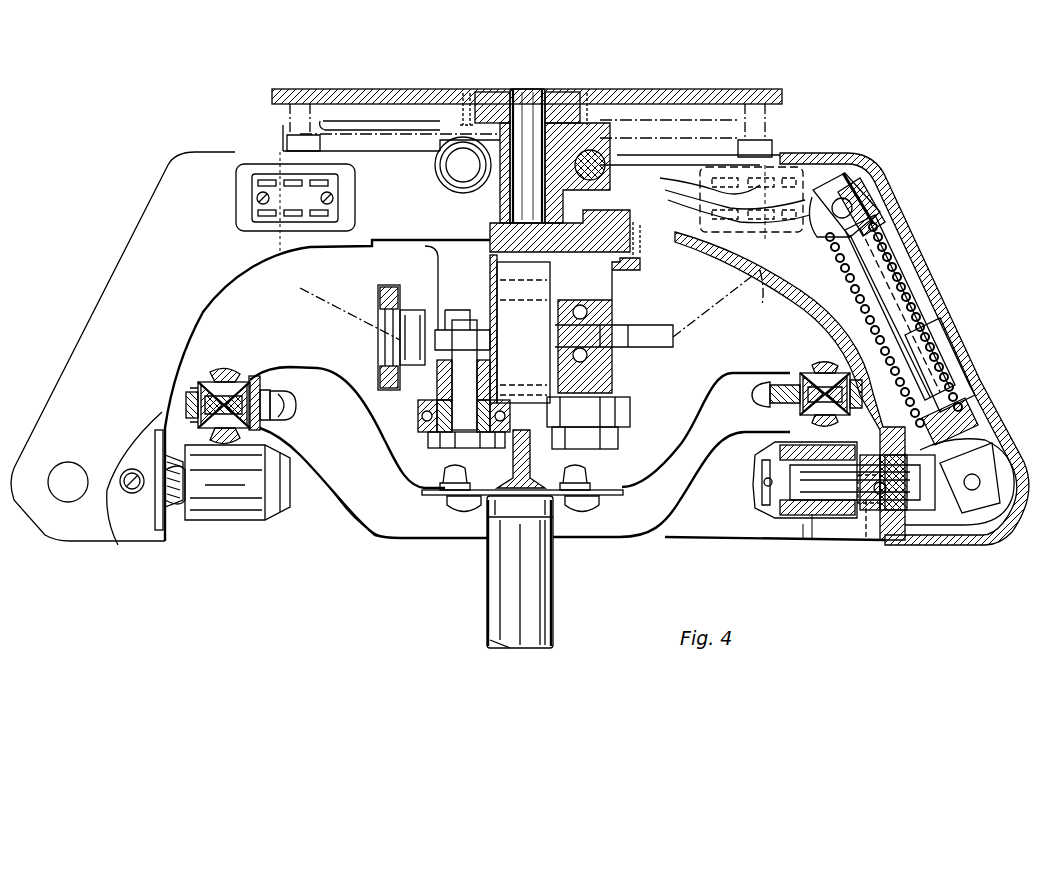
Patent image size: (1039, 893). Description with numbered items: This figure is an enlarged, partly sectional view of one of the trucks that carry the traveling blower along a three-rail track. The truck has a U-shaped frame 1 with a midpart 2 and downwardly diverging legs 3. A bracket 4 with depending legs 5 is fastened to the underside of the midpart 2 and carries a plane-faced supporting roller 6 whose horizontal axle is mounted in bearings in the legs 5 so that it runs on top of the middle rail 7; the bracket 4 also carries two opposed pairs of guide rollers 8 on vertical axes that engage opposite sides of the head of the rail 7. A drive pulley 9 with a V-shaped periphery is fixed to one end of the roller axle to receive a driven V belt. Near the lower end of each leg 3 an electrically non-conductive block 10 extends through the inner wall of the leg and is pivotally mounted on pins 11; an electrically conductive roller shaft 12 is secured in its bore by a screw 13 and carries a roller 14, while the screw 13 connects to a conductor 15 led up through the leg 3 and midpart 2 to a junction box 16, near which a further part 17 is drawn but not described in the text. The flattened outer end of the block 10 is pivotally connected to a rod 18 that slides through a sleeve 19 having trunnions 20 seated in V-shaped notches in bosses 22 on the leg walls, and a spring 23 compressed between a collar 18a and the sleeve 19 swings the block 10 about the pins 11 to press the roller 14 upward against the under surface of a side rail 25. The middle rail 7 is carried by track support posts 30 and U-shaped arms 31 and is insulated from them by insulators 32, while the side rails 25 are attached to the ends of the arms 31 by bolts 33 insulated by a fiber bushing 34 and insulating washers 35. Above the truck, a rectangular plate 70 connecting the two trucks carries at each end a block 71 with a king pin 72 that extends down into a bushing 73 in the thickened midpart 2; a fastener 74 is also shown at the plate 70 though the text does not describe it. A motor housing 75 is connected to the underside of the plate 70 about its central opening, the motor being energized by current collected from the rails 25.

The U-shaped frame 1 is at (160, 155).
The midpart 2 is at (683, 246).
The legs 3 is at (958, 308).
The bracket 4 is at (492, 232).
The depending legs 5 is at (436, 268).
The supporting roller 6 is at (597, 342).
The rail 7 is at (527, 445).
The guide rollers 8 is at (430, 436).
The drive pulley 9 is at (378, 320).
The electrically non-conductive block 10 is at (165, 510).
The pins 11 is at (130, 495).
The roller shaft 12 is at (795, 510).
The screw 13 is at (915, 510).
The roller 14 is at (245, 520).
The conductor 15 is at (1012, 515).
The junction box 16 is at (790, 178).
The terminal bracket 17 is at (356, 190).
The rod 18 is at (950, 365).
The collar 18a is at (968, 415).
The sleeve 19 is at (880, 196).
The trunnions 20 is at (870, 182).
The bosses 22 is at (858, 188).
The spring 23 is at (905, 265).
The side rail 25 is at (226, 372).
The track support posts 30 is at (553, 620).
The U-shaped arms 31 is at (395, 538).
The insulators 32 is at (485, 520).
The bolts 33 is at (296, 410).
The fiber bushing 34 is at (188, 405).
The insulating washers 35 is at (255, 377).
The rectangular plate 70 is at (630, 80).
The block 71 is at (486, 96).
The king pin 72 is at (538, 92).
The bushings 73 is at (502, 195).
The bolt 74 is at (458, 122).
The motor housing 75 is at (750, 300).